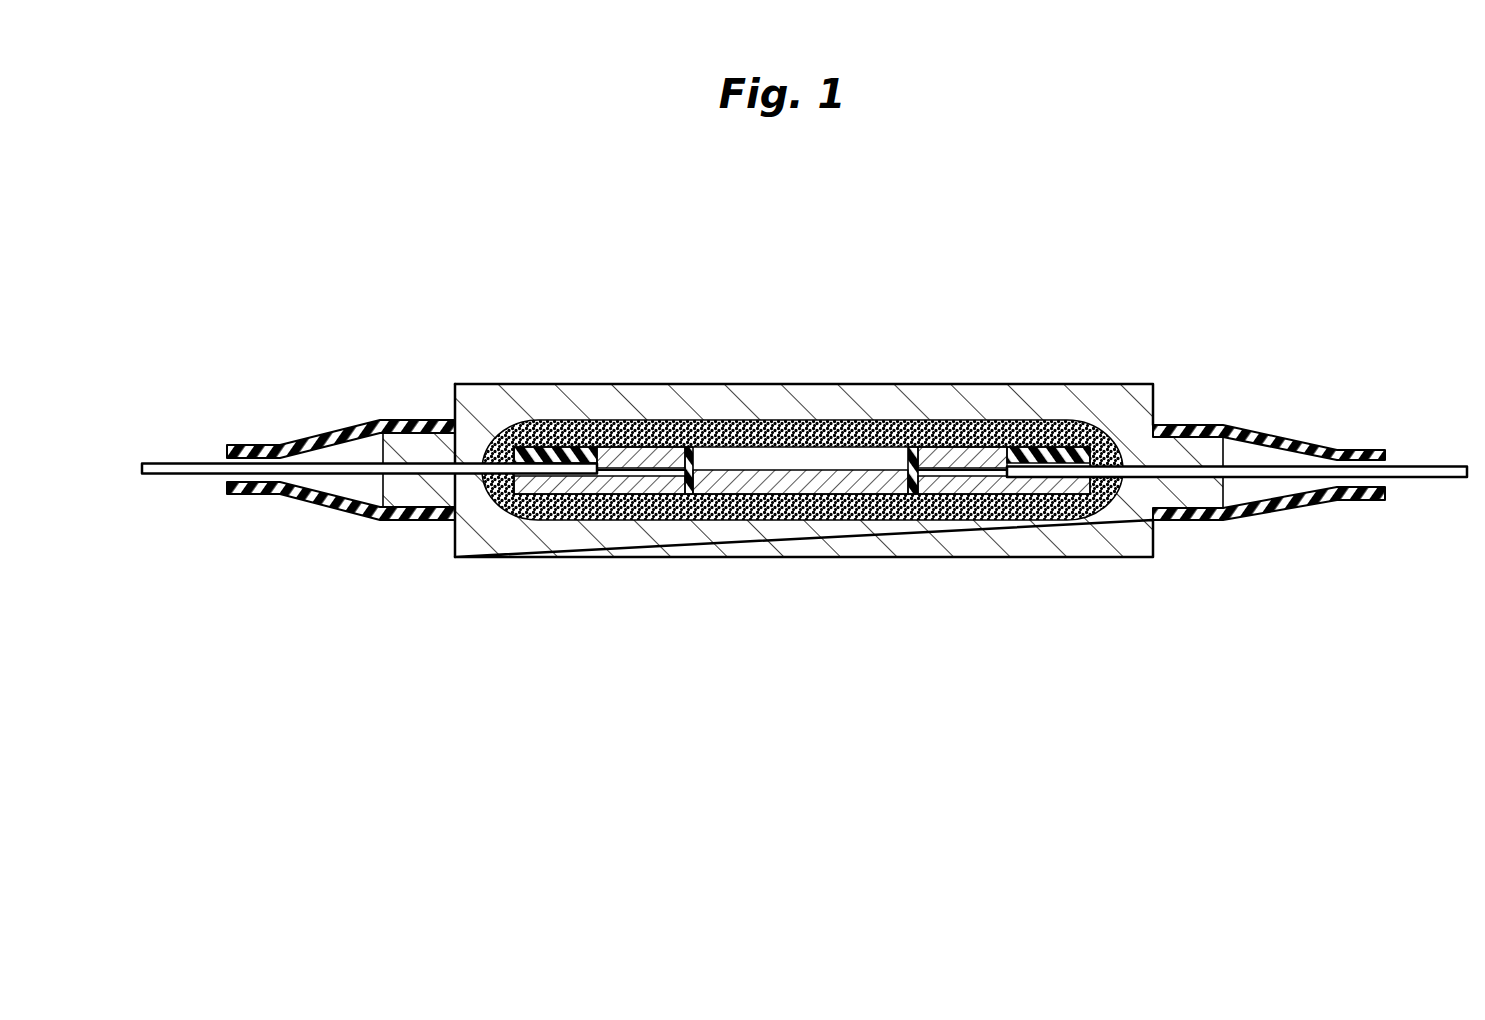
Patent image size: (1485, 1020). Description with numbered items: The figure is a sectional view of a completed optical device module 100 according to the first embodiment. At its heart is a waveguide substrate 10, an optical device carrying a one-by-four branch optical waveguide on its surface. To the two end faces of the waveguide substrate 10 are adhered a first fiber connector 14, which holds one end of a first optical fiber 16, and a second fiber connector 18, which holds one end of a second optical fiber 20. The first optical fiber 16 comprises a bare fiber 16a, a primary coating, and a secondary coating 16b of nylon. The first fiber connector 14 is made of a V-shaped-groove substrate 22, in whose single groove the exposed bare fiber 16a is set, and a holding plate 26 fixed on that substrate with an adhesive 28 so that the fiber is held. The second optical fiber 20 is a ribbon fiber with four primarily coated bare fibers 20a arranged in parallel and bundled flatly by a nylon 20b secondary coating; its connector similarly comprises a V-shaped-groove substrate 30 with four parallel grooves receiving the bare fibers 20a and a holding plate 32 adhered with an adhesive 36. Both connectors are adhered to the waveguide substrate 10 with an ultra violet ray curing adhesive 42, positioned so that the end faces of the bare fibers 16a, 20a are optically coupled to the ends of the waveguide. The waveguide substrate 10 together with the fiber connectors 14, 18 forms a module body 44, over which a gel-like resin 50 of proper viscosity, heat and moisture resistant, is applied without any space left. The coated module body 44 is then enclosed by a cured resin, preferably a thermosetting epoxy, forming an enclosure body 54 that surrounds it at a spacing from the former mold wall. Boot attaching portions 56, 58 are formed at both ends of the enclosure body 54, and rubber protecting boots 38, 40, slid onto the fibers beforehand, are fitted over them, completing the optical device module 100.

The optical device module 100 is at (1182, 330).
The waveguide substrate 10 is at (825, 488).
The first fiber connector 14 is at (592, 447).
The first optical fiber 16 is at (190, 463).
The bare fiber 16a is at (683, 465).
The secondary coating 16b is at (352, 467).
The second fiber connector 18 is at (973, 447).
The second optical fiber 20 is at (1440, 467).
The bare fibers 20a is at (1002, 467).
The nylon 20b is at (1313, 467).
The V-shaped-groove substrate 22 is at (563, 490).
The holding plate 26 is at (637, 447).
The adhesive 28 is at (545, 445).
The V-shaped-groove substrate 30 is at (1063, 487).
The holding plate 32 is at (943, 447).
The adhesive 36 is at (1070, 447).
The protecting boot 38 is at (333, 500).
The protecting boot 40 is at (1223, 523).
The ultra violet ray curing adhesive 42 is at (693, 447).
The module body 44 is at (812, 463).
The gel-like resin 50 is at (777, 430).
The enclosure body 54 is at (495, 398).
The boot attaching portion 56 is at (415, 492).
The boot attaching portion 58 is at (1215, 440).